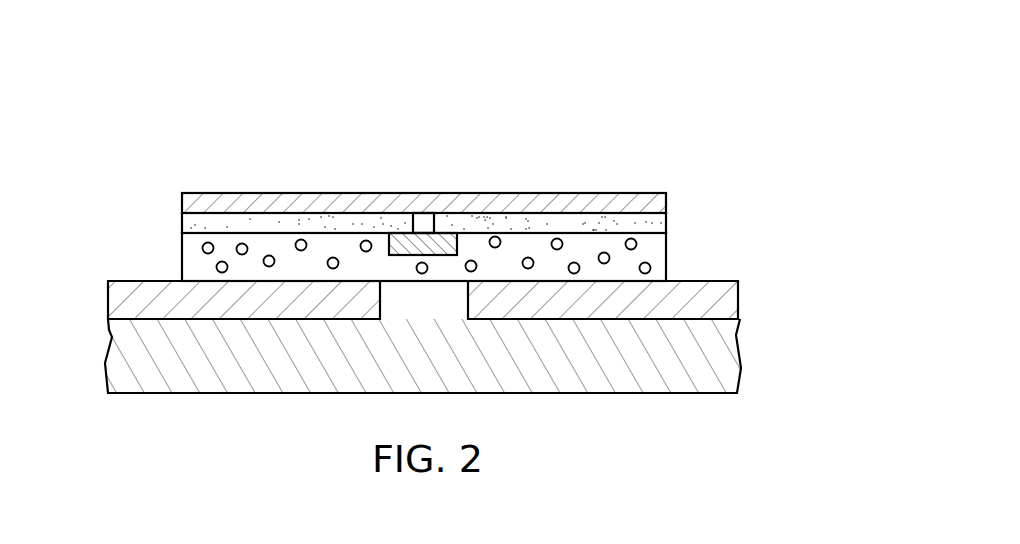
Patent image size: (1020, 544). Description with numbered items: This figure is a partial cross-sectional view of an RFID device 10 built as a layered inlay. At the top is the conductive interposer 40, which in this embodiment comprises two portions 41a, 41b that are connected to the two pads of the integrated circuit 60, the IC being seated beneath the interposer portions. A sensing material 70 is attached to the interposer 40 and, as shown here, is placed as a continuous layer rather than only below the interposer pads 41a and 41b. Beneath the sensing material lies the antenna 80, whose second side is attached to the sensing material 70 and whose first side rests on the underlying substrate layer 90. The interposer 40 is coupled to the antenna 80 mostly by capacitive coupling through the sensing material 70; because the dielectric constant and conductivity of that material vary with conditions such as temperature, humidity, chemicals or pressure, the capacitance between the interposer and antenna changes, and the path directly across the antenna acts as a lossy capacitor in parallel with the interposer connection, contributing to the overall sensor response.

The RFID device 10 is at (419, 249).
The conductive interposer 40 is at (514, 223).
The interposer portion 41a is at (666, 223).
The interposer portion 41b is at (182, 223).
The integrated circuit 60 is at (404, 242).
The sensing material 70 is at (183, 265).
The antenna 80 is at (108, 300).
The substrate 90 is at (108, 360).